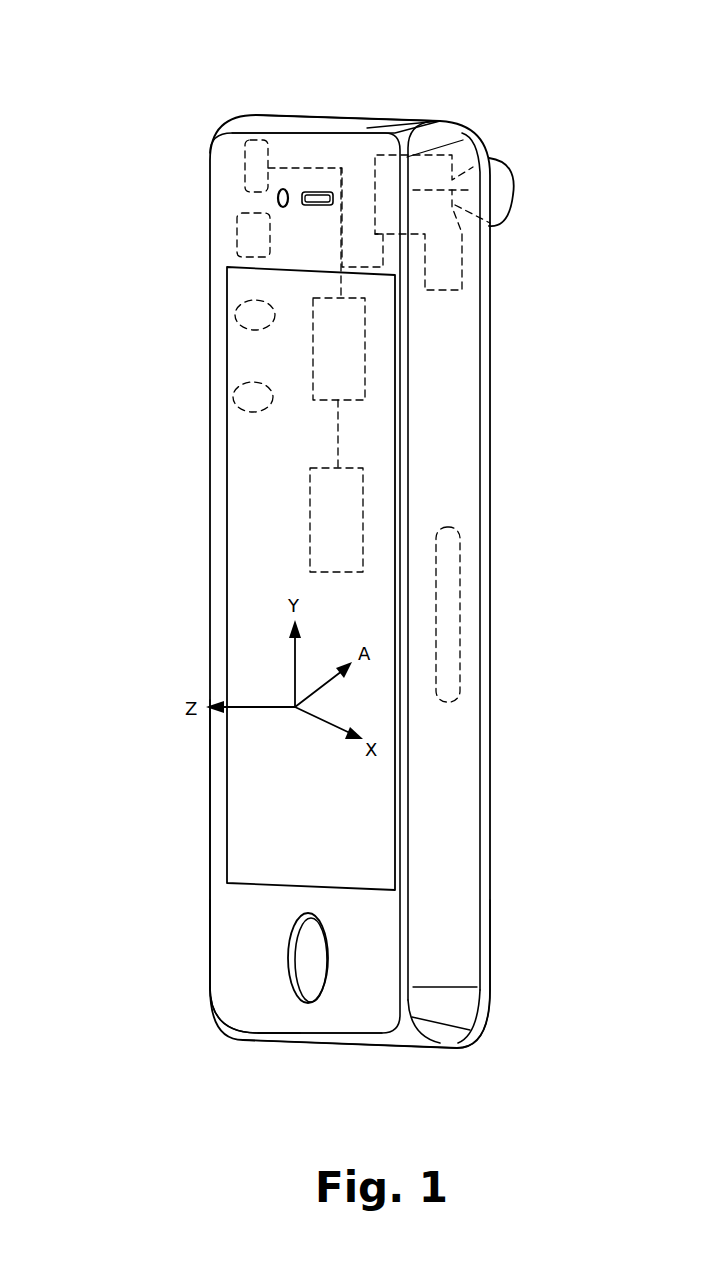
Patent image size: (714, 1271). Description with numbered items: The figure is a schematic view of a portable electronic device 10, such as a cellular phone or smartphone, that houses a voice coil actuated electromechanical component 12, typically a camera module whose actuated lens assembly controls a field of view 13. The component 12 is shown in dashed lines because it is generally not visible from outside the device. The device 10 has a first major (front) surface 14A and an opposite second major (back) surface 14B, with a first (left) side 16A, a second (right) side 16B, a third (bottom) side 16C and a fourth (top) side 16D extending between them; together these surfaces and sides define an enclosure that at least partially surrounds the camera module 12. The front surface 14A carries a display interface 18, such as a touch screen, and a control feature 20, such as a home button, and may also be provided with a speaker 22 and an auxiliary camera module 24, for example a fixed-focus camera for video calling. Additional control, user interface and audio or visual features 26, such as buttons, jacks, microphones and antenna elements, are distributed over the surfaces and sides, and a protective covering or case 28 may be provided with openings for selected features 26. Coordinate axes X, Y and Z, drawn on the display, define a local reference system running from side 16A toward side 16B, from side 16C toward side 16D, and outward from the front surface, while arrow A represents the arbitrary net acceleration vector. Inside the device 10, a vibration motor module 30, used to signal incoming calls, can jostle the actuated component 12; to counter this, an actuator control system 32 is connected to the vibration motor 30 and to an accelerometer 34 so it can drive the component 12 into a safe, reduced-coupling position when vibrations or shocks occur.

The portable electronic device 10 is at (113, 66).
The electromechanical component 12 is at (462, 131).
The field of view 13 is at (512, 172).
The first major surface 14A is at (240, 970).
The second major surface 14B is at (500, 1028).
The first side 16A is at (192, 546).
The second side 16B is at (480, 340).
The third side 16C is at (287, 1058).
The fourth side 16D is at (362, 92).
The display interface 18 is at (255, 770).
The control feature 20 is at (323, 985).
The speaker 22 is at (318, 190).
The auxiliary camera module 24 is at (277, 198).
The control, user interface and audio or visual features 26 is at (245, 232).
The protective covering or case 28 is at (208, 863).
The vibration motor module 30 is at (246, 153).
The actuator control system 32 is at (339, 284).
The accelerometer 34 is at (336, 486).